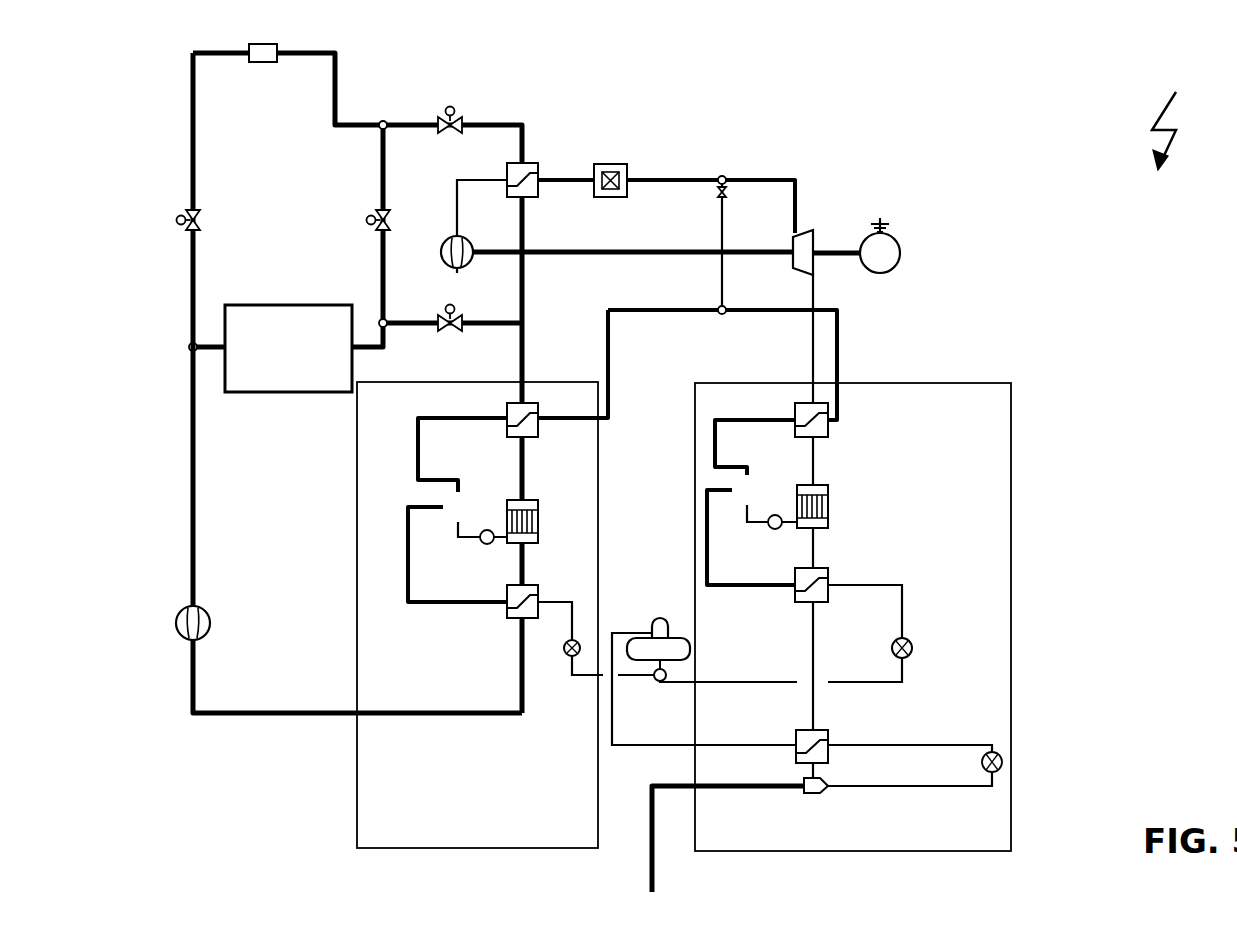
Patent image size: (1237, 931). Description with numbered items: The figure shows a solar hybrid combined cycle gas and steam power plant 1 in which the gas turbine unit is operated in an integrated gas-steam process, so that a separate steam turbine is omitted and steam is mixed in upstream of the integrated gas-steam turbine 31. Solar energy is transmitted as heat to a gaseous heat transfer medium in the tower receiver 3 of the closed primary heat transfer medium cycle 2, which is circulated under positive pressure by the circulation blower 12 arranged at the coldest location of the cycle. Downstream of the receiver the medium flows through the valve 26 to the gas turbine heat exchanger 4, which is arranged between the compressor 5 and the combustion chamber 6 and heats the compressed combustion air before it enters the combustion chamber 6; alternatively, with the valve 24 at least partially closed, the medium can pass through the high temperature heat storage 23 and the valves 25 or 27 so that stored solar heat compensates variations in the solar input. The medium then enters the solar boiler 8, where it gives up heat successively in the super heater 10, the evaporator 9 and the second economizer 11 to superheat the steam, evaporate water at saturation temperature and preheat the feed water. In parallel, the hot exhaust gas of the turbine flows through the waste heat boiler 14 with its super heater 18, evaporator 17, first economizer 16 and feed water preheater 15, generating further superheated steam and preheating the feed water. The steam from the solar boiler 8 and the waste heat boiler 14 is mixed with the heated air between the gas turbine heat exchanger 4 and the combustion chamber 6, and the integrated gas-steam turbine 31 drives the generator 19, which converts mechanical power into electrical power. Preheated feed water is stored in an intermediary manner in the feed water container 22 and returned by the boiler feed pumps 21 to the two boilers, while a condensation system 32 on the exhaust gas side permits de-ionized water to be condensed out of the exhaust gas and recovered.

The solar hybrid combined cycle gas and steam power plant 1 is at (1175, 116).
The heat transfer medium cycle 2 is at (190, 313).
The tower receiver 3 is at (262, 63).
The gas turbine heat exchanger 4 is at (540, 168).
The compressor 5 is at (447, 240).
The combustion chamber 6 is at (618, 168).
The solar boiler 8 is at (355, 582).
The evaporator 9 is at (538, 512).
The super heater 10 is at (533, 425).
The second economizer 11 is at (533, 588).
The circulation blower 12 is at (178, 622).
The waste heat boiler 14 is at (695, 507).
The feed water preheater 15 is at (815, 740).
The first economizer 16 is at (818, 580).
The evaporator 17 is at (828, 512).
The super heater 18 is at (828, 432).
The generator 19 is at (888, 235).
The boiler feed pump 21 is at (567, 663).
The feed water container 22 is at (655, 620).
The high temperature heat storage 23 is at (245, 393).
The valve 24 is at (183, 216).
The valve 25 is at (377, 213).
The valve 26 is at (455, 118).
The valve 27 is at (445, 318).
The integrated gas-steam turbine 31 is at (815, 233).
The condensation system 32 is at (820, 790).